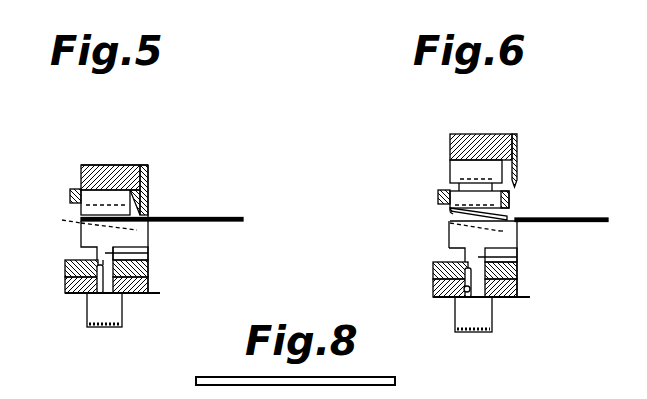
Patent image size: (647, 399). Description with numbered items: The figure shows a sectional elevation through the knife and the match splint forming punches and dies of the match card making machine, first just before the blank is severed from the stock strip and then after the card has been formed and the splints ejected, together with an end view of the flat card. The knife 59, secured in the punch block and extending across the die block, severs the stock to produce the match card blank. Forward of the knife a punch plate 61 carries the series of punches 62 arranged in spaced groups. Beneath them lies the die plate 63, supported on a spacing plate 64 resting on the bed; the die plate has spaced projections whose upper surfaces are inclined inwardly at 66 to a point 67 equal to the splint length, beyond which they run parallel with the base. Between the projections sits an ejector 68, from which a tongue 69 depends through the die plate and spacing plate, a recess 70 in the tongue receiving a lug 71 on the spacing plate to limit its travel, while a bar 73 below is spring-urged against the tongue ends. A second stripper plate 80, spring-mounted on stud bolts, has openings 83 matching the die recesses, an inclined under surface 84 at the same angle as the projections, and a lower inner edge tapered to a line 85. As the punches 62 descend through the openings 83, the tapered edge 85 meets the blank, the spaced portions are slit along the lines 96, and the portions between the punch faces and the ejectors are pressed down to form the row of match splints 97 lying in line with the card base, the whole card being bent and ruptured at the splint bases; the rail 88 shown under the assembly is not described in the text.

In FIG. 5, the knife 59 is at (148, 180).
In FIG. 6, the knife 59 is at (517, 152).
In FIG. 5, the punch plate 61 is at (83, 172).
In FIG. 6, the punch plate 61 is at (452, 143).
In FIG. 5, the punches 62 is at (100, 198).
In FIG. 6, the punches 62 is at (477, 172).
In FIG. 5, the die plate 63 is at (148, 273).
In FIG. 6, the die plate 63 is at (517, 275).
In FIG. 5, the spacing plate 64 is at (128, 293).
In FIG. 6, the spacing plate 64 is at (497, 295).
In FIG. 5, the inclined upper surface of the projection 66 is at (58, 220).
In FIG. 6, the inclined upper surface of the projection 66 is at (452, 225).
In FIG. 5, the point on the projection 67 is at (137, 230).
In FIG. 6, the point on the projection 67 is at (497, 230).
In FIG. 5, the ejector 68 is at (97, 235).
In FIG. 6, the ejector 68 is at (483, 259).
In FIG. 5, the tongue 69 is at (148, 252).
In FIG. 6, the tongue 69 is at (517, 255).
In FIG. 5, the recess 70 is at (83, 277).
In FIG. 6, the recess 70 is at (442, 280).
In FIG. 5, the lug 71 is at (97, 294).
In FIG. 6, the lug 71 is at (468, 296).
In FIG. 5, the bar 73 is at (112, 312).
In FIG. 6, the bar 73 is at (482, 312).
In FIG. 5, the second stripper plate 80 is at (70, 195).
In FIG. 6, the second stripper plate 80 is at (438, 192).
In FIG. 5, the openings 83 is at (148, 165).
In FIG. 6, the openings 83 is at (488, 200).
In FIG. 6, the inclined under surface 84 is at (510, 215).
In FIG. 5, the tapered edge 85 is at (148, 213).
In FIG. 6, the tapered edge 85 is at (513, 215).
In FIG. 5, the rail 88 is at (164, 215).
In FIG. 6, the rail 88 is at (568, 213).
In FIG. 6, the cutting lines 96 is at (449, 209).
In FIG. 6, the match splints 97 is at (450, 206).